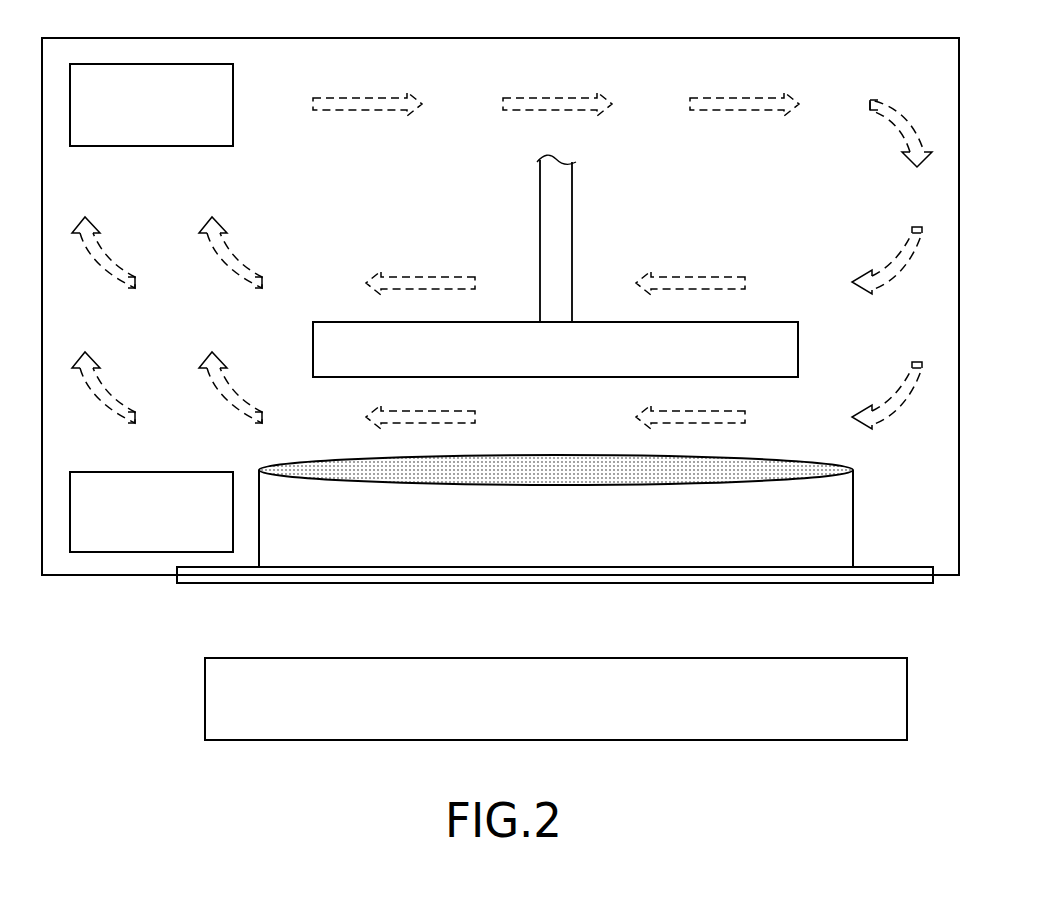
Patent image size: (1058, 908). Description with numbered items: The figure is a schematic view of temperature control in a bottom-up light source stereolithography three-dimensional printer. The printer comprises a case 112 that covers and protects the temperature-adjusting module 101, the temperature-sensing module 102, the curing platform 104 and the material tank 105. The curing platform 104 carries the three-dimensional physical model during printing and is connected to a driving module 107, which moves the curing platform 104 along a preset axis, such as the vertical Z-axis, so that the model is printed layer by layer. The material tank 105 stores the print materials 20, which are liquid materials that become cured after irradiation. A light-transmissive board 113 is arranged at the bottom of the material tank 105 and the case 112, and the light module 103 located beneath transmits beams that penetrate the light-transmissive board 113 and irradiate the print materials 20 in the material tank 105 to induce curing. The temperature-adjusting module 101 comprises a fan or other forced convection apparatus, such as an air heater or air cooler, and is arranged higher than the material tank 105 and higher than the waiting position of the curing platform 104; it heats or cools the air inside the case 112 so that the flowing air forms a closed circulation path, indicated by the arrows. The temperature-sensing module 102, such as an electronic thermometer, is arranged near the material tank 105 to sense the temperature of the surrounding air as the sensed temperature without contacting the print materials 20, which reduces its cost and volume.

The case 112 is at (502, 38).
The temperature-adjusting module 101 is at (151, 66).
The temperature-sensing module 102 is at (151, 473).
The driving module 107 is at (572, 243).
The curing platform 104 is at (798, 350).
The print materials 20 is at (737, 470).
The material tank 105 is at (847, 510).
The light-transmissive board 113 is at (663, 577).
The light module 103 is at (663, 733).